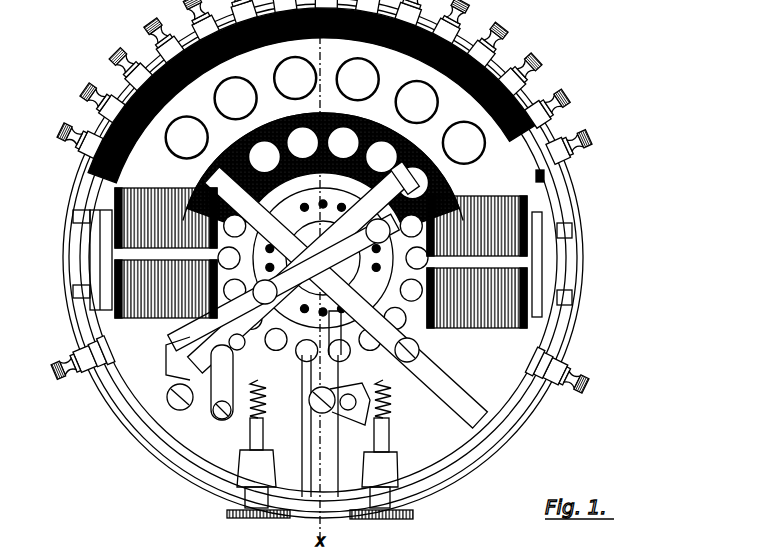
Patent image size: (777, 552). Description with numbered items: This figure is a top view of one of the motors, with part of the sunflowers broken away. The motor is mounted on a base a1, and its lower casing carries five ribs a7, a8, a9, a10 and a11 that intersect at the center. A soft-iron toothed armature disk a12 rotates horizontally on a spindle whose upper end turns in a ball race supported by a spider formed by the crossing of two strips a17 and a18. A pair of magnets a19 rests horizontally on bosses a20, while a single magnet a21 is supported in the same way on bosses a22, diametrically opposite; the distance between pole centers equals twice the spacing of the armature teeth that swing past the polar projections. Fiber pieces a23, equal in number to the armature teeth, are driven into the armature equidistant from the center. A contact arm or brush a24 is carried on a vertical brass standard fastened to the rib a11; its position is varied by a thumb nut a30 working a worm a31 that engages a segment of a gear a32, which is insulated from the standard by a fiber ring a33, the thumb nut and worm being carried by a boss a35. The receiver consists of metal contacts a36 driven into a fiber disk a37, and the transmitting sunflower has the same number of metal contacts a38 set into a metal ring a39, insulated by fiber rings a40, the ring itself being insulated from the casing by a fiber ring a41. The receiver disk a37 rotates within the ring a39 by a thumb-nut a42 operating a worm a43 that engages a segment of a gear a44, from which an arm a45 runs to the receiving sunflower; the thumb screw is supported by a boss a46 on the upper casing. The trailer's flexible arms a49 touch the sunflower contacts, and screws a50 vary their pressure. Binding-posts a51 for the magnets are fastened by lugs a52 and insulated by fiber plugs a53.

The base a1 is at (483, 453).
The fiber ring a41 is at (320, 79).
The binding-posts a51 is at (314, 261).
The lugs a52 is at (317, 264).
The fiber plugs a53 is at (317, 274).
The fiber rings a40 is at (469, 144).
The metal ring a39 is at (168, 137).
The metal contacts a36 is at (265, 157).
The fiber pieces a23 is at (323, 244).
The rib a7 is at (435, 360).
The rib a10 is at (420, 182).
The screws a50 is at (309, 383).
The strip a18 is at (248, 327).
The flexible arms a49 is at (190, 337).
The strip a17 is at (352, 323).
The contact arm or brush a24 is at (340, 370).
The magnet a21 is at (200, 262).
The pair of magnets a19 is at (510, 248).
The bosses a22 is at (107, 272).
The bosses a20 is at (543, 287).
The rib a8 is at (180, 383).
The segment of a gear a44 is at (214, 425).
The arm a45 is at (222, 383).
The soft-iron toothed armature disk a12 is at (309, 389).
The fiber ring a33 is at (315, 402).
The segment of a gear a32 is at (353, 417).
The worm a43 is at (263, 407).
The worm a31 is at (392, 413).
The boss a46 is at (263, 468).
The boss a35 is at (390, 470).
The thumb-nut a42 is at (230, 514).
The thumb nut a30 is at (413, 522).
The rib a11 is at (326, 467).
The rib a9 is at (217, 187).
The fiber disk a37 is at (187, 163).
The metal contacts a38 is at (538, 177).